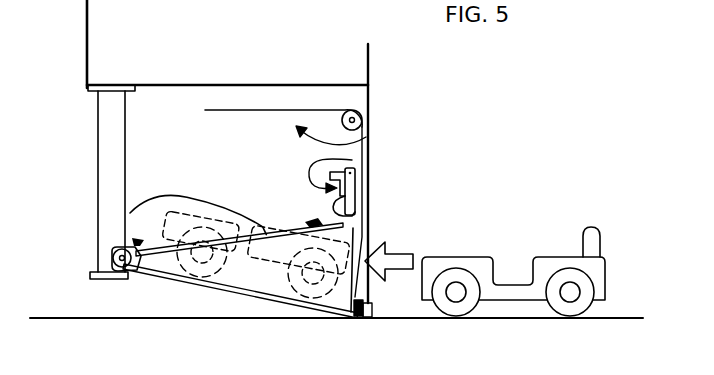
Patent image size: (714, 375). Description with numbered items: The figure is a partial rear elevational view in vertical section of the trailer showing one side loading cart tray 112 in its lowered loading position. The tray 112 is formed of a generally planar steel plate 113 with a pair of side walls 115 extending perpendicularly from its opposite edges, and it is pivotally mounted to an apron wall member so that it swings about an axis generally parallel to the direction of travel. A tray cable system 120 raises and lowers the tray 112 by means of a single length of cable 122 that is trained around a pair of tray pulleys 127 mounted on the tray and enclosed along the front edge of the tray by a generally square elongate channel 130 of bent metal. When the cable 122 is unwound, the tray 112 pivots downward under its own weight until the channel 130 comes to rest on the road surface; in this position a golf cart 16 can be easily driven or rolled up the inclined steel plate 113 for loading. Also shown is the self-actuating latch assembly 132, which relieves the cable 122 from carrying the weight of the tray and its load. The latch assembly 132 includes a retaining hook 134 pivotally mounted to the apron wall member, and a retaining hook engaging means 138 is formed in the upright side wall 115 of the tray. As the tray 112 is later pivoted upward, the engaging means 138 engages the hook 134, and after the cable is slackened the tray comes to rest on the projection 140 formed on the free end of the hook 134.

The golf cart 16 is at (597, 272).
The side loading cart tray 112 is at (118, 246).
The steel plate 113 is at (236, 288).
The side wall 115 is at (200, 197).
The tray cable system 120 is at (370, 138).
The cable 122 is at (318, 109).
The tray pulley 127 is at (356, 317).
The elongate channel 130 is at (368, 314).
The self-actuating latch assembly 132 is at (368, 160).
The retaining hook 134 is at (357, 190).
The retaining hook engaging means 138 is at (370, 235).
The projection 140 is at (368, 213).